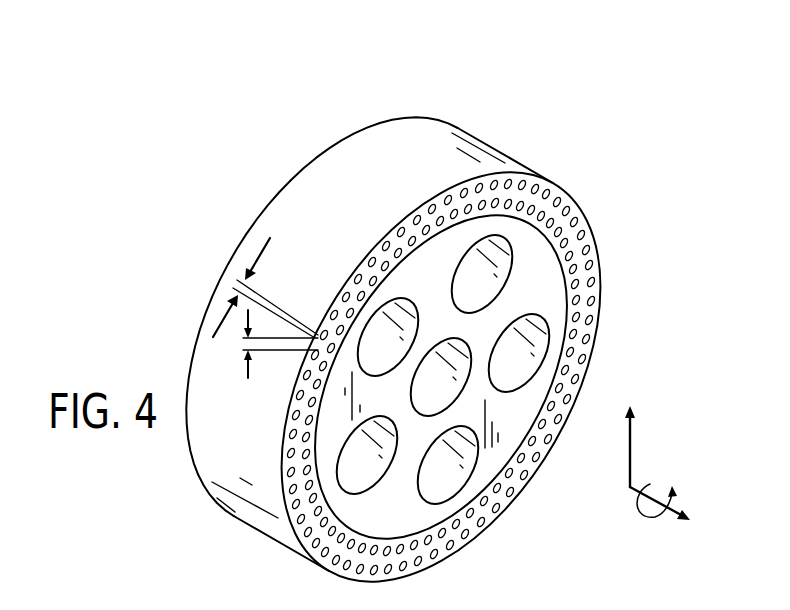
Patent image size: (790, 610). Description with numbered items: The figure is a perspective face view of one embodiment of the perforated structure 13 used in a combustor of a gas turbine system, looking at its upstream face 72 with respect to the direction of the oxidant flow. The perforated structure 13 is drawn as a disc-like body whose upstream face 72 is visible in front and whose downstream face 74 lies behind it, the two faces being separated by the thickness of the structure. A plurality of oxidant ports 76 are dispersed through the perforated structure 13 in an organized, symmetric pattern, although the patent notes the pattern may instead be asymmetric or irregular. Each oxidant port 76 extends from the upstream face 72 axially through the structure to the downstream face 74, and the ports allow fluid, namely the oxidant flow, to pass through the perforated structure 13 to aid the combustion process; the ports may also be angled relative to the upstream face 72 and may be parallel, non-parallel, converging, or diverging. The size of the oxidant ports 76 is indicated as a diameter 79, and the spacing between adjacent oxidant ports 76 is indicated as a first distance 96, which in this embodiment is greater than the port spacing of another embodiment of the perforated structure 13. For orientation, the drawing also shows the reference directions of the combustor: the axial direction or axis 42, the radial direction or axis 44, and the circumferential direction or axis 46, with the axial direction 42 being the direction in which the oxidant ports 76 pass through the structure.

The perforated structure 13 is at (586, 88).
The axial direction or axis 42 is at (640, 492).
The radial direction or axis 44 is at (630, 452).
The circumferential direction or axis 46 is at (652, 522).
The upstream face 72 is at (509, 503).
The downstream face 74 is at (333, 147).
The oxidant ports 76 is at (337, 283).
The diameter 79 is at (248, 378).
The first distance 96 is at (258, 256).